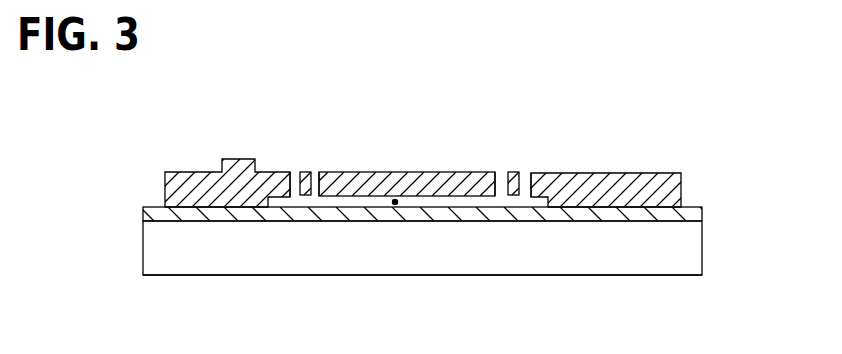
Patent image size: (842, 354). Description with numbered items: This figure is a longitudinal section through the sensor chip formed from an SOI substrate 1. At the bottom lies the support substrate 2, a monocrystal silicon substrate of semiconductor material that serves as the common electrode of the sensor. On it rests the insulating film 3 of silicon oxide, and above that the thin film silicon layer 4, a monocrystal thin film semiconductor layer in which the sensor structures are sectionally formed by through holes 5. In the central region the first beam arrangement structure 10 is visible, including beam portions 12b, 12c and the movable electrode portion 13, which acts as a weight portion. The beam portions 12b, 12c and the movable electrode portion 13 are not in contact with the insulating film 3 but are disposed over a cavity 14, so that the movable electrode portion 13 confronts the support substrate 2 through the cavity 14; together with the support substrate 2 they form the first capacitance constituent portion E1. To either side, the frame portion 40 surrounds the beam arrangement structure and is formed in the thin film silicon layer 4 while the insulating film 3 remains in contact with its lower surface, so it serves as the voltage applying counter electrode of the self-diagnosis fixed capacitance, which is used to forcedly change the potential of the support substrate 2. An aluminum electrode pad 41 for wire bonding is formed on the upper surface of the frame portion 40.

The SOI substrate 1 is at (512, 276).
The support substrate 2 is at (610, 266).
The insulating film 3 is at (702, 212).
The thin film silicon layer 4 is at (417, 161).
The frame portion 40 is at (637, 173).
The electrode pad 41 is at (248, 159).
The through hole 5 is at (296, 172).
The first beam arrangement structure 10 is at (407, 148).
The beam portion 12b is at (512, 172).
The beam portion 12c is at (305, 172).
The movable electrode portion 13 is at (404, 160).
The cavity 14 is at (395, 205).
The first capacitance constituent portion E1 is at (418, 112).